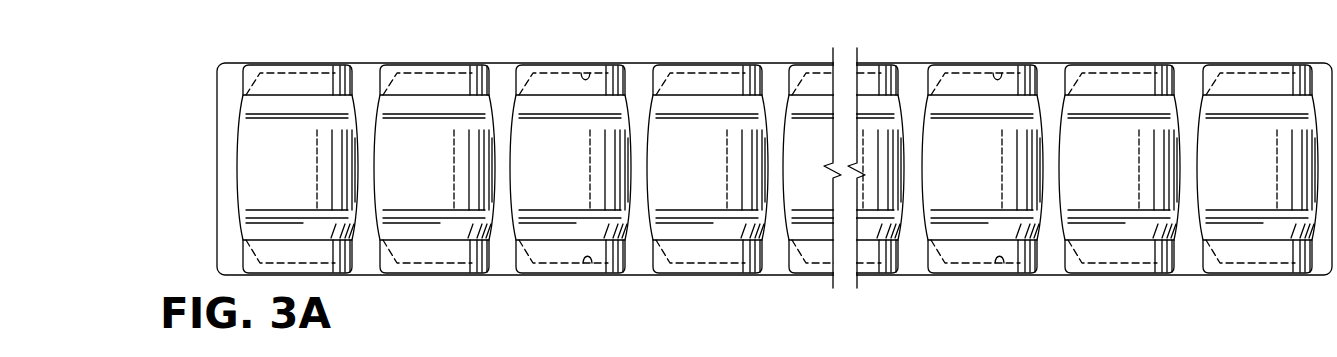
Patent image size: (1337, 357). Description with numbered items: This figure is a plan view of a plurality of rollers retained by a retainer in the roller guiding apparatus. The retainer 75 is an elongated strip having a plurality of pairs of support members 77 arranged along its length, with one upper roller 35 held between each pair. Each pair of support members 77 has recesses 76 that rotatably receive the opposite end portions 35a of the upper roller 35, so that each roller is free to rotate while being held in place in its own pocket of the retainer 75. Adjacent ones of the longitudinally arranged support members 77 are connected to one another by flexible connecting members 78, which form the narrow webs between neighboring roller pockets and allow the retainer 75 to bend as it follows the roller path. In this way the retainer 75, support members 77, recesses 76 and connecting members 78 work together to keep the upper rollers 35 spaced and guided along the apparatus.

The retainer 75 is at (655, 283).
The flexible connecting member 78 is at (367, 72).
The support member 77 is at (532, 63).
The upper roller 35 is at (533, 200).
The end portion 35a is at (562, 73).
The recess 76 is at (590, 75).